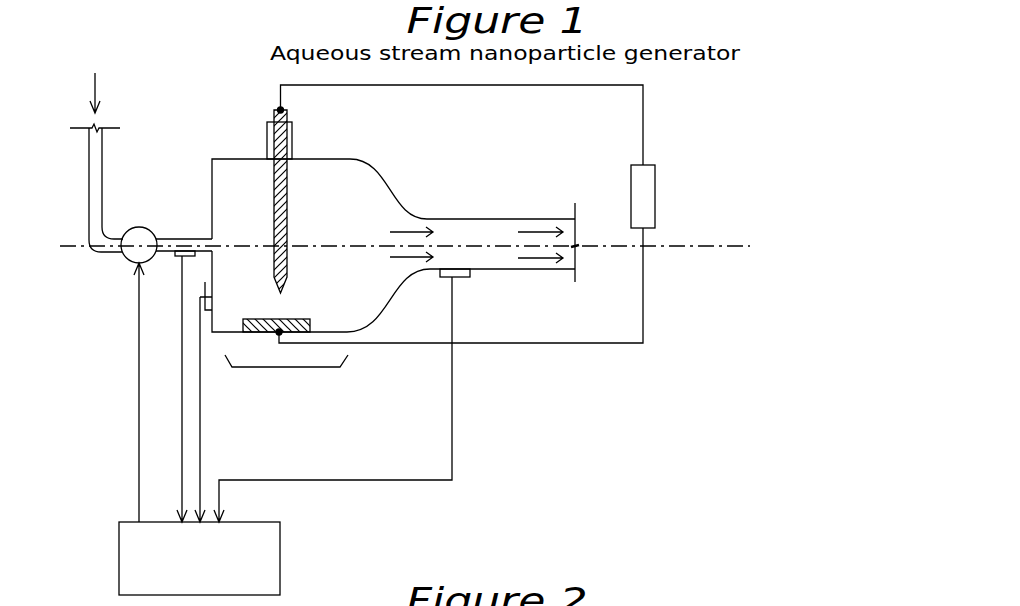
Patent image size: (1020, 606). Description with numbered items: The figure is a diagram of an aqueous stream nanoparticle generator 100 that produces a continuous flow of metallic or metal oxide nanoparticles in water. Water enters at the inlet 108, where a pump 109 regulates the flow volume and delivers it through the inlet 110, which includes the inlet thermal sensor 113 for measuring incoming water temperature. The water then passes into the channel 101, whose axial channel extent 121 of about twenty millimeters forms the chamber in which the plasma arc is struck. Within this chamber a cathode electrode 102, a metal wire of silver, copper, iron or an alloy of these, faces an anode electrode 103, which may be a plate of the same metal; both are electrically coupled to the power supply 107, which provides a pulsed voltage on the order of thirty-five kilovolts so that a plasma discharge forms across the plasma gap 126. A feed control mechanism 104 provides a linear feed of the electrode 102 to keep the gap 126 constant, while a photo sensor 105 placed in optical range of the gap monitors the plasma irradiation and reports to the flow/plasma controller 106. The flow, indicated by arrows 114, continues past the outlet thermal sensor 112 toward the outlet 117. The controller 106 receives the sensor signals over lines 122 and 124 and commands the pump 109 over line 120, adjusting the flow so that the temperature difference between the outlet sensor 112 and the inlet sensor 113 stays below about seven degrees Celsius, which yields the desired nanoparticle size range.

The nanoparticle generator 100 is at (254, 98).
The channel 101 is at (340, 185).
The cathode electrode 102 is at (287, 240).
The anode electrode 103 is at (305, 319).
The feed control mechanism 104 is at (268, 142).
The photo sensor 105 is at (205, 282).
The flow/plasma controller 106 is at (119, 522).
The power supply 107 is at (530, 214).
The inlet 108 is at (105, 102).
The pump 109 is at (125, 258).
The inlet 110 is at (200, 239).
The outlet thermal sensor 112 is at (440, 277).
The inlet thermal sensor 113 is at (176, 257).
The stream flow arrows 114 is at (400, 233).
The outlet 117 is at (537, 228).
The pump control line 120 is at (130, 392).
The channel extent 121 is at (286, 376).
The flow sensor signal line 122 is at (172, 389).
The chamber sensor signal line 124 is at (210, 409).
The plasma gap 126 is at (278, 308).